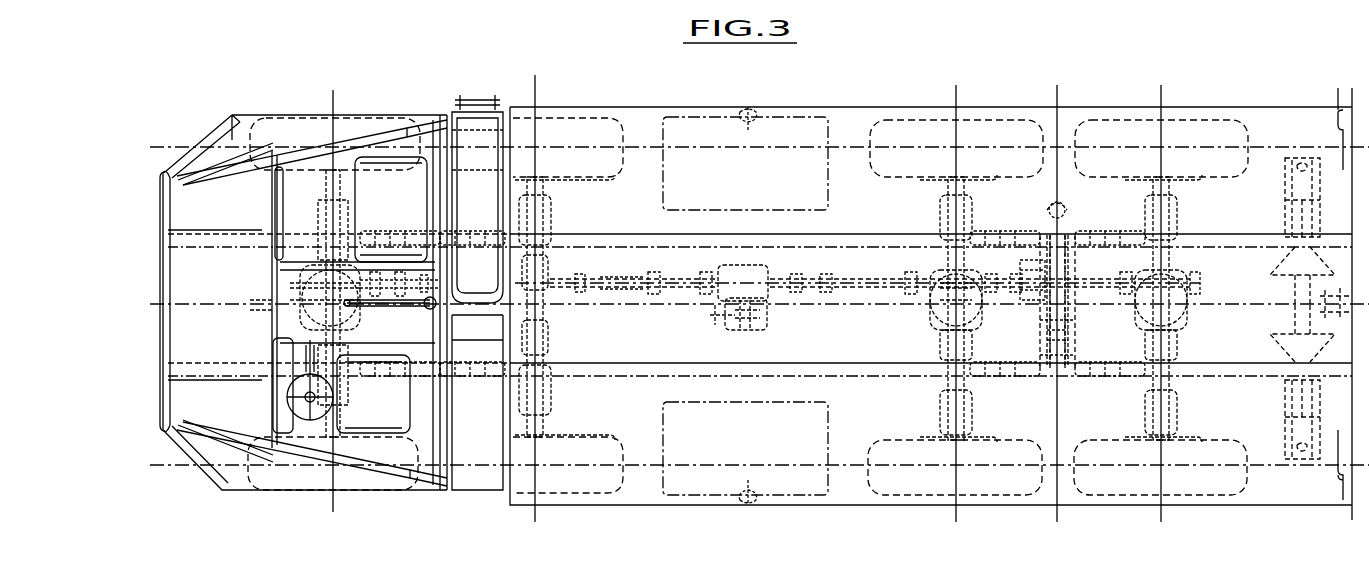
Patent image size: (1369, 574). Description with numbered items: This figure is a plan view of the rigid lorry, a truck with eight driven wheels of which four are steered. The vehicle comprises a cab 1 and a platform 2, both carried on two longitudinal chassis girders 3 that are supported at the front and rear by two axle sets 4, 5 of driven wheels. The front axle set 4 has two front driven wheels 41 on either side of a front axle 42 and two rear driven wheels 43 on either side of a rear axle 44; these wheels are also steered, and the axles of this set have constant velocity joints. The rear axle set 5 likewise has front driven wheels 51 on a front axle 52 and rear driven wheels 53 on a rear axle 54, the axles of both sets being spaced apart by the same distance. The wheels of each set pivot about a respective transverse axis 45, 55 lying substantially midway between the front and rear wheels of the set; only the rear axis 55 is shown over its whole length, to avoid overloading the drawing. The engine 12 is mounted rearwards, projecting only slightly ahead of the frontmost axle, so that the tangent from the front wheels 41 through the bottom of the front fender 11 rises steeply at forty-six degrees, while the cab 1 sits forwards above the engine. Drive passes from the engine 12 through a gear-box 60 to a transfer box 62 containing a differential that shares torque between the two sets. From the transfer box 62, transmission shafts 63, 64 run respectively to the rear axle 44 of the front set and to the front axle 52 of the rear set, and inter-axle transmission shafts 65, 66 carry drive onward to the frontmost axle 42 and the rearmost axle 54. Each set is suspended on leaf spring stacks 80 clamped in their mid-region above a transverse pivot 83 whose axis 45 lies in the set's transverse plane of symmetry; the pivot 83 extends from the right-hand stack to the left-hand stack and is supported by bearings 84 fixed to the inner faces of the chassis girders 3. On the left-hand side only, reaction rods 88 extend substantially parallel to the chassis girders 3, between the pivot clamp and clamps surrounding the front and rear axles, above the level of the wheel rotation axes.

The cab 1 is at (233, 108).
The platform 2 is at (785, 105).
The longitudinal chassis girders 3 is at (874, 243).
The front axle set 4 is at (410, 112).
The rear axle set 5 is at (1057, 133).
The front fender 11 is at (176, 197).
The engine 12 is at (280, 296).
The front driven wheels 41 is at (360, 126).
The front axle 42 is at (337, 338).
The rear driven wheels 43 is at (550, 130).
The rear axle 44 is at (548, 345).
The axis 45 is at (440, 337).
The front driven wheels 51 is at (973, 131).
The front axle 52 is at (964, 346).
The rear driven wheels 53 is at (1189, 122).
The rear axle 54 is at (1174, 345).
The axis 55 is at (1062, 193).
The gear-box 60 is at (431, 322).
The transfer box 62 is at (753, 264).
The transmission shaft 63 is at (635, 284).
The transmission shaft 64 is at (894, 294).
The inter-axle transmission shaft 65 is at (467, 283).
The inter-axle transmission shaft 66 is at (1086, 281).
The spring stack 80 is at (372, 216).
The pivot 83 is at (1068, 328).
The bearings 84 is at (1036, 258).
The reaction rods 88 is at (486, 378).